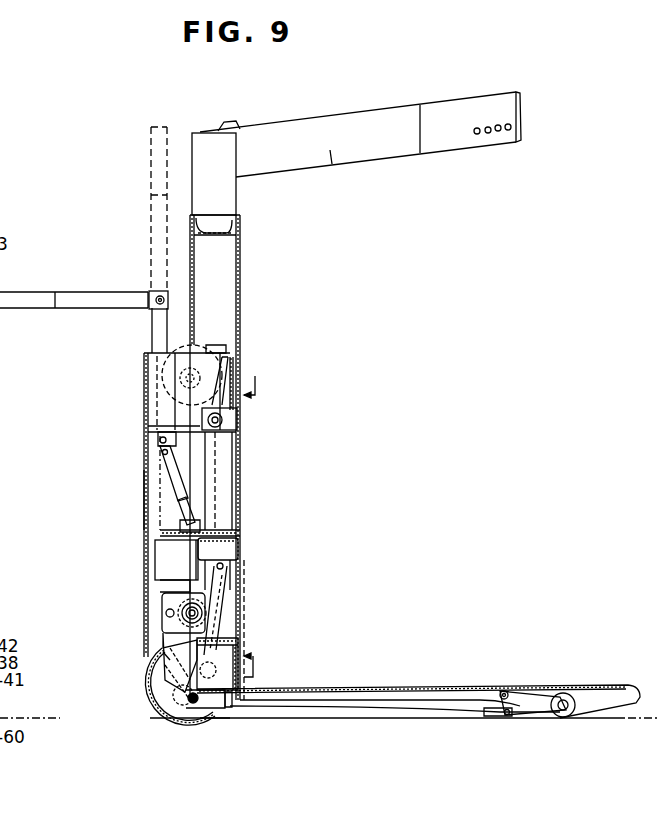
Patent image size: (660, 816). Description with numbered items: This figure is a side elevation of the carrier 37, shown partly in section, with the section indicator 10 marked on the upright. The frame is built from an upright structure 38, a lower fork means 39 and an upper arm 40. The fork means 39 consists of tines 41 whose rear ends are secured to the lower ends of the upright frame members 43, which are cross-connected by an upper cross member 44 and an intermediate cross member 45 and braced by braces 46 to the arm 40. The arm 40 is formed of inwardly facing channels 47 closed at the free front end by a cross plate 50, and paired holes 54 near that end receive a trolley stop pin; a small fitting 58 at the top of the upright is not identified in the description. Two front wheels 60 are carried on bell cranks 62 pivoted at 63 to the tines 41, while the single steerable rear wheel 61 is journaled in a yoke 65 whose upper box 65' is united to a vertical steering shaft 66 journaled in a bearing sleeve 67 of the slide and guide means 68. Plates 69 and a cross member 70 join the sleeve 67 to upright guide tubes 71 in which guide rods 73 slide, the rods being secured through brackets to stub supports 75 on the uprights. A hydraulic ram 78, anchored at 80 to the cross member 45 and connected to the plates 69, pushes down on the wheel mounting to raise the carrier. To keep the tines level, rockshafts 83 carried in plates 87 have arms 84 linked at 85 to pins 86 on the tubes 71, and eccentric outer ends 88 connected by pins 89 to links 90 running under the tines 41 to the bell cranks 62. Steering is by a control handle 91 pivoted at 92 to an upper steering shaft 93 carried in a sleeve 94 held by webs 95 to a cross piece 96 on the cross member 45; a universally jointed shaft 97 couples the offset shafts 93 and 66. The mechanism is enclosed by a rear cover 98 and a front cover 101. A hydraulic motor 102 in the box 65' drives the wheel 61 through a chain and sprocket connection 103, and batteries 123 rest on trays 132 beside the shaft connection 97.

The section line 10 is at (260, 527).
The carrier 37 is at (188, 126).
The upright structure 38 is at (234, 298).
The fork means 39 is at (392, 688).
The arm 40 is at (368, 116).
The tines 41 is at (456, 688).
The upright frame member 43 is at (230, 262).
The upper cross member 44 is at (238, 236).
The intermediate cross member 45 is at (238, 438).
The braces 46 is at (330, 158).
The channels 47 is at (444, 104).
The cross plate 50 is at (521, 102).
The holes 54 is at (508, 130).
The lug 58 is at (228, 127).
The front wheels 60 is at (562, 712).
The rear wheel 61 is at (152, 672).
The bell crank 62 is at (528, 698).
The pivot 63 is at (504, 690).
The yoke 65 is at (154, 662).
The upper box 65' is at (150, 613).
The steering shaft 66 is at (160, 590).
The bearing sleeve 67 is at (172, 548).
The slide and guide means 68 is at (242, 580).
The plates 69 is at (196, 565).
The cross member 70 is at (235, 560).
The guide tubes 71 is at (220, 604).
The guide rod 73 is at (222, 632).
The stub support 75 is at (240, 540).
The hydraulic ram 78 is at (240, 460).
The cylinder anchorage 80 is at (226, 422).
The rock shaft 83 is at (168, 718).
The arm 84 is at (168, 686).
The link 85 is at (216, 618).
The pin 86 is at (225, 563).
The plates 87 is at (162, 665).
The eccentric outer end 88 is at (176, 694).
The pin 89 is at (193, 704).
The link 90 is at (246, 706).
The control handle 91 is at (27, 300).
The pivot 92 is at (155, 297).
The steering shaft 93 is at (157, 328).
The sleeve 94 is at (152, 360).
The webs 95 is at (210, 348).
The cross piece 96 is at (228, 372).
The universally jointed shaft 97 is at (165, 455).
The rear cover 98 is at (147, 500).
The front cover 101 is at (240, 327).
The hydraulic motor 102 is at (176, 632).
The chain and sprocket connection 103 is at (182, 702).
The batteries 123 is at (163, 483).
The trays 132 is at (175, 532).